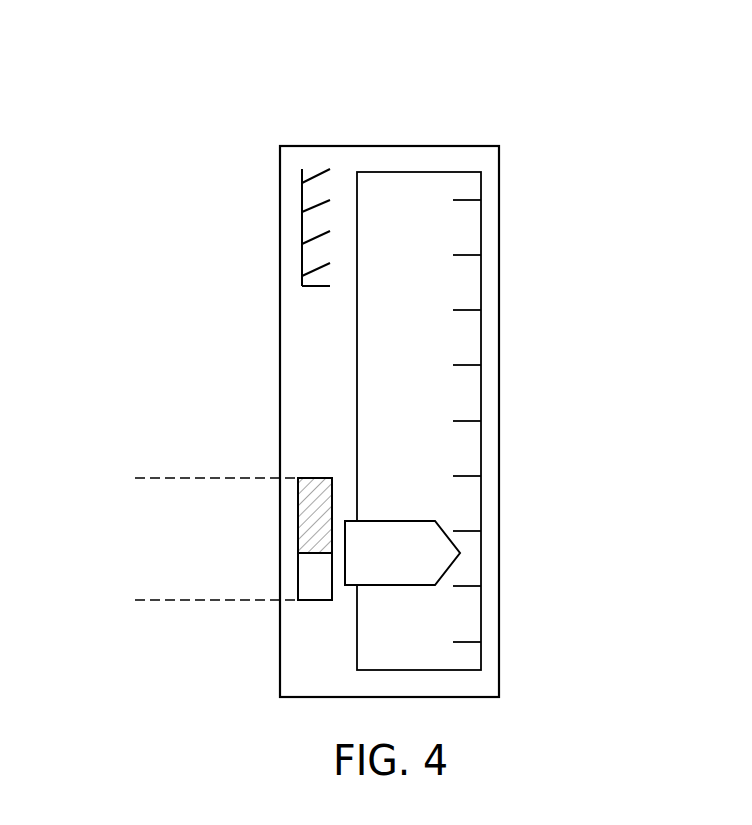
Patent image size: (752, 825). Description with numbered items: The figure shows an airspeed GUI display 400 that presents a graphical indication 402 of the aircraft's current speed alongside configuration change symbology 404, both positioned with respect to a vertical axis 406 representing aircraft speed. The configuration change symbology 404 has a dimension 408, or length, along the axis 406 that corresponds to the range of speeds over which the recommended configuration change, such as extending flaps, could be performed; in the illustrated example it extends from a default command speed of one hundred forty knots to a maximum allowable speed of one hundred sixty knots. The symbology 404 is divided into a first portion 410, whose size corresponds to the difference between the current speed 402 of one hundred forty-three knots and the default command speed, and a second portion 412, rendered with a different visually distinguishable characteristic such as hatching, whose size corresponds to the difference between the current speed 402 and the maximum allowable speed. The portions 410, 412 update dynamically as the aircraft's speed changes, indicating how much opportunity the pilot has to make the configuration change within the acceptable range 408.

The airspeed GUI display 400 is at (217, 95).
The graphical indication of current speed 402 is at (461, 553).
The configuration change symbology 404 is at (298, 545).
The vertical axis 406 is at (558, 170).
The dimension 408 is at (135, 478).
The first portion 410 is at (297, 571).
The second portion 412 is at (297, 507).